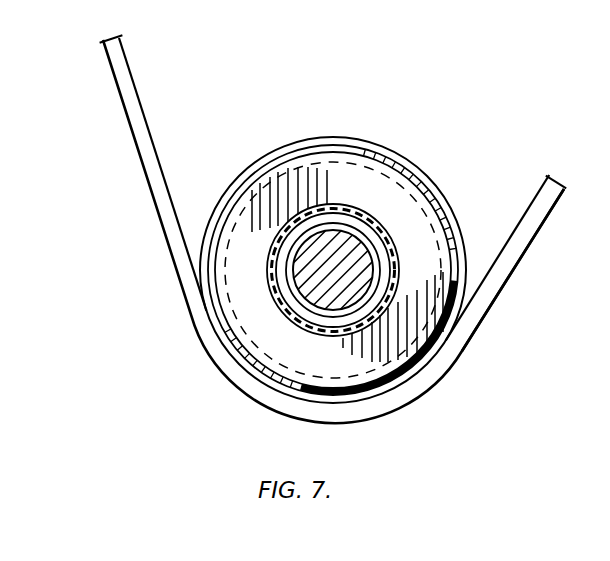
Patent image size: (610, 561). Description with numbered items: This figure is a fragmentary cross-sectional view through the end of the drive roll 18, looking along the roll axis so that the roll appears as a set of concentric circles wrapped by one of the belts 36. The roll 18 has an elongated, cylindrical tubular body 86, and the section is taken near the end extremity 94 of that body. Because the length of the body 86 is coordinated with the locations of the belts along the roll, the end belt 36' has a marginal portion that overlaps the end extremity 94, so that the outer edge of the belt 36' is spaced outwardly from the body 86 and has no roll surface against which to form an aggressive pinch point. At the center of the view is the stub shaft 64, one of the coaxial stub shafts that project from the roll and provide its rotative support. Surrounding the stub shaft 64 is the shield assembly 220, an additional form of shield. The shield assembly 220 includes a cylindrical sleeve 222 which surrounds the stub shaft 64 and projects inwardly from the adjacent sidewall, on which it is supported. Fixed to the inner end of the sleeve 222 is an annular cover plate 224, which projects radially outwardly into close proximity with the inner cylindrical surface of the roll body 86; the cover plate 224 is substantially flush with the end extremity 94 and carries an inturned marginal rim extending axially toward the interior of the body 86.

The belt 36 is at (332, 229).
The end belt 36' is at (506, 234).
The drive roll 18 is at (291, 128).
The tubular body 86 is at (358, 139).
The end extremity 94 is at (428, 182).
The annular cover plate 224 is at (243, 227).
The cylindrical sleeve 222 is at (389, 234).
The stub shaft 64 is at (330, 293).
The shield assembly 220 is at (268, 333).